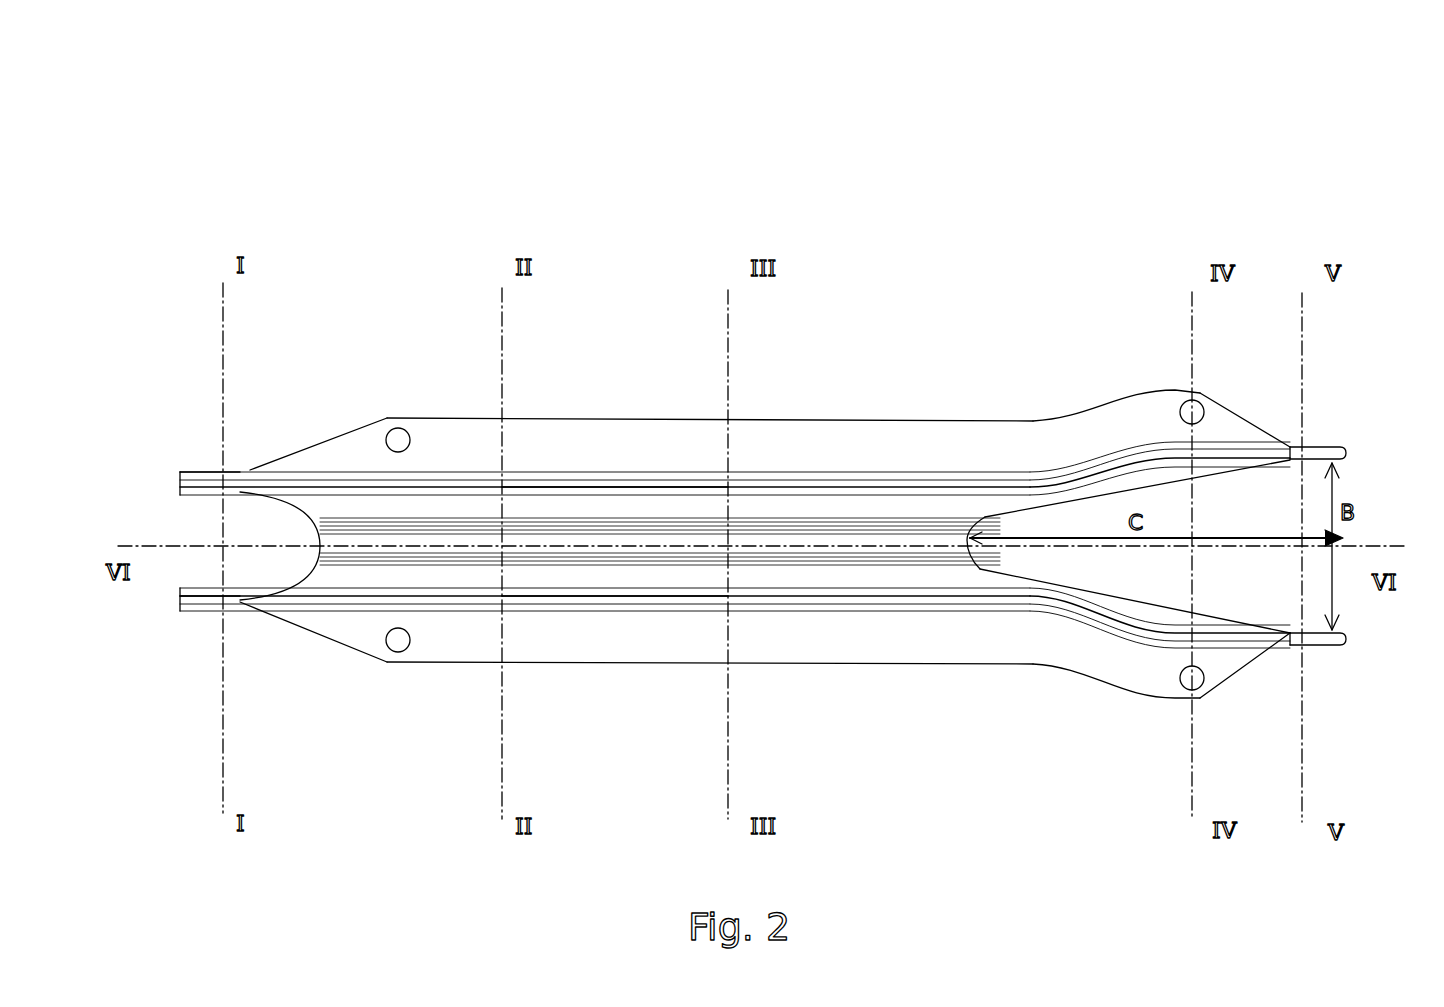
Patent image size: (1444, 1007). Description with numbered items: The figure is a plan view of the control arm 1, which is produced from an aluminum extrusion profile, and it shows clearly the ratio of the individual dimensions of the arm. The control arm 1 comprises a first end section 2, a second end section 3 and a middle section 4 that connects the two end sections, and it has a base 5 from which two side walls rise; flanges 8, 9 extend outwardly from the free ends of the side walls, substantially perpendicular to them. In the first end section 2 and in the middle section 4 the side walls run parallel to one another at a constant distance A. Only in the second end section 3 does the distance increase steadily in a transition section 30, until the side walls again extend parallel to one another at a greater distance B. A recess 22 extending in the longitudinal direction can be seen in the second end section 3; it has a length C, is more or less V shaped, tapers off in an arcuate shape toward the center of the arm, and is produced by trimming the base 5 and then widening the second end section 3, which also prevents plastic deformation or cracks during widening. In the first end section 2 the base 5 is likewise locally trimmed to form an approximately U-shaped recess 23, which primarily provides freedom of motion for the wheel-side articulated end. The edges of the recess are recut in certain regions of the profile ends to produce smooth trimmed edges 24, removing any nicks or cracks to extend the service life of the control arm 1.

The control arm 1 is at (1342, 335).
The first end section 2 is at (636, 452).
The second end section 3 is at (1312, 476).
The middle section 4 is at (615, 397).
The base 5 is at (603, 568).
The flange 8 is at (888, 630).
The flange 9 is at (870, 458).
The recess 22 is at (1243, 575).
The recess 23 is at (200, 565).
The trimmed edges 24 is at (1127, 597).
The transition section 30 is at (1118, 357).